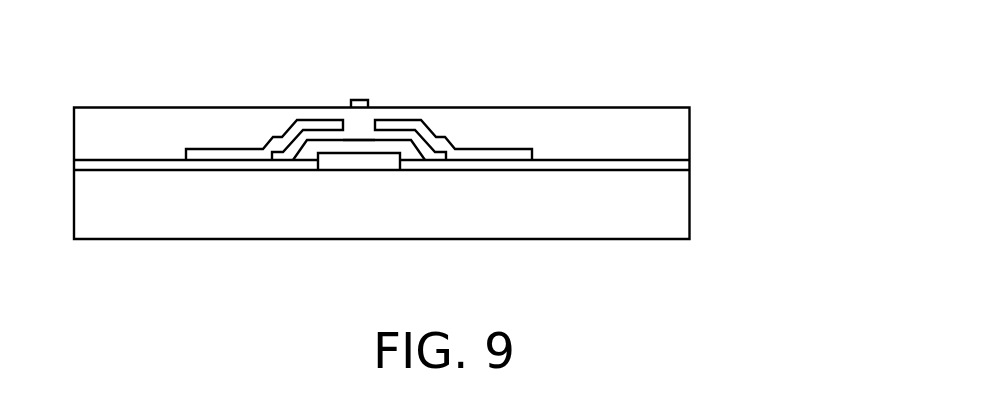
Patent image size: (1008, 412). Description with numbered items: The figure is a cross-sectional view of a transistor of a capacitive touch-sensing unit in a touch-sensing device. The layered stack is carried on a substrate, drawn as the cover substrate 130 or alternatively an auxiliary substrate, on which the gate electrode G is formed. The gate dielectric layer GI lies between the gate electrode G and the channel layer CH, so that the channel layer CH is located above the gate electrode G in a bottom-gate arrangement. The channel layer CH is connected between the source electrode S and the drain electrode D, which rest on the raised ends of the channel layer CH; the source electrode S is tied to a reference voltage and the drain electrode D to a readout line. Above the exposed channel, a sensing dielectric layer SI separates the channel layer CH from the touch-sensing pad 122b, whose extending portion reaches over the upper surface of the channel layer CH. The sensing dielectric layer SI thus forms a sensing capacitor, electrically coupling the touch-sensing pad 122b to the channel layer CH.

The cover substrate 130 is at (684, 208).
The gate dielectric layer GI is at (228, 165).
The gate electrode G is at (370, 163).
The sensing dielectric layer SI is at (366, 128).
The channel layer CH is at (316, 135).
The drain electrode D is at (272, 139).
The source electrode S is at (427, 135).
The touch-sensing pad 122b is at (360, 100).